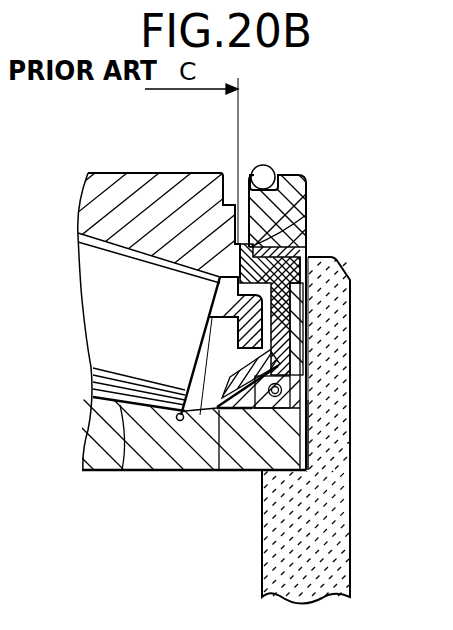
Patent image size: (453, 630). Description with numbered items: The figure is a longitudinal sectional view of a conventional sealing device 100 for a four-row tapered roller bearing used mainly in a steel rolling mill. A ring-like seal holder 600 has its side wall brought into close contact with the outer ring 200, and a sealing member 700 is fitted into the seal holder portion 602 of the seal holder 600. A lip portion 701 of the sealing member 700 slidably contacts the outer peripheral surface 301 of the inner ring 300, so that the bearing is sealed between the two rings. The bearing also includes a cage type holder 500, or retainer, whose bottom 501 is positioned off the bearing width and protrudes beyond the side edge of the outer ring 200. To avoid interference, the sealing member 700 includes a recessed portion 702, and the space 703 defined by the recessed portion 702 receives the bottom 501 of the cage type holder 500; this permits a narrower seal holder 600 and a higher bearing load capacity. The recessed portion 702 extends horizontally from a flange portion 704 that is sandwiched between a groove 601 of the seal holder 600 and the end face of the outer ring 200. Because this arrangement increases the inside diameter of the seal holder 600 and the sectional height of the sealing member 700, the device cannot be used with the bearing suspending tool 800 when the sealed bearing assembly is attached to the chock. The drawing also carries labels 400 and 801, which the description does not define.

The sealing device 100 is at (282, 160).
The outer ring 200 is at (120, 173).
The inner ring 300 is at (165, 473).
The outer peripheral surface 301 is at (303, 432).
The laminated element 400 is at (125, 473).
The cage type holder 500 is at (215, 473).
The bottom of the cage type holder 501 is at (303, 327).
The seal holder 600 is at (306, 182).
The groove 601 is at (306, 212).
The seal holder portion 602 is at (306, 222).
The sealing member 700 is at (320, 257).
The lip portion 701 is at (303, 397).
The recessed portion 702 is at (303, 348).
The space 703 is at (290, 300).
The flange portion 704 is at (242, 240).
The bearing suspending tool 800 is at (350, 568).
The case wall 801 is at (335, 510).